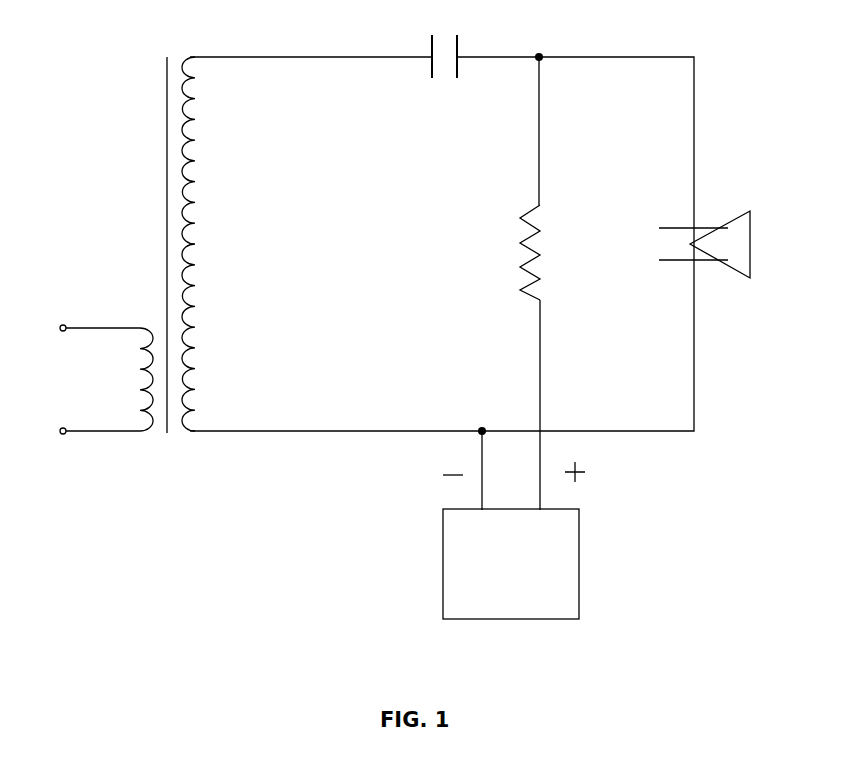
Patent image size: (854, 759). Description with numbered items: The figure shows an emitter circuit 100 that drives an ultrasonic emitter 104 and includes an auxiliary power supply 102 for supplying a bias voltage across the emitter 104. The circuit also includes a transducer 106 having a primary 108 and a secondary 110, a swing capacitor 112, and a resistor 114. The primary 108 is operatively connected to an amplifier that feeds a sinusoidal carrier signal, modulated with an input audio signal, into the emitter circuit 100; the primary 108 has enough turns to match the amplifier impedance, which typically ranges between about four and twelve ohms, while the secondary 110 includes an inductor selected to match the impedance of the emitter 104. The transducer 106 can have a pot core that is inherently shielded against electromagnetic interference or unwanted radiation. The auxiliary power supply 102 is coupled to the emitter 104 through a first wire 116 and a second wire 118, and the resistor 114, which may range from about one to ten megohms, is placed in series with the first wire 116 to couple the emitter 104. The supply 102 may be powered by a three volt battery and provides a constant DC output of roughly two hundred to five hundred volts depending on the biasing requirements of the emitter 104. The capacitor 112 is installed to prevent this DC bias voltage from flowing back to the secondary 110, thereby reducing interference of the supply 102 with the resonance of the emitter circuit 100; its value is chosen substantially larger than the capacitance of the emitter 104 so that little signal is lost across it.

The emitter circuit 100 is at (78, 145).
The auxiliary power supply 102 is at (455, 605).
The emitter 104 is at (748, 213).
The transducer 106 is at (168, 453).
The primary 108 is at (146, 322).
The secondary 110 is at (186, 113).
The swing capacitor 112 is at (442, 65).
The resistor 114 is at (523, 262).
The first wire 116 is at (540, 367).
The second wire 118 is at (480, 460).